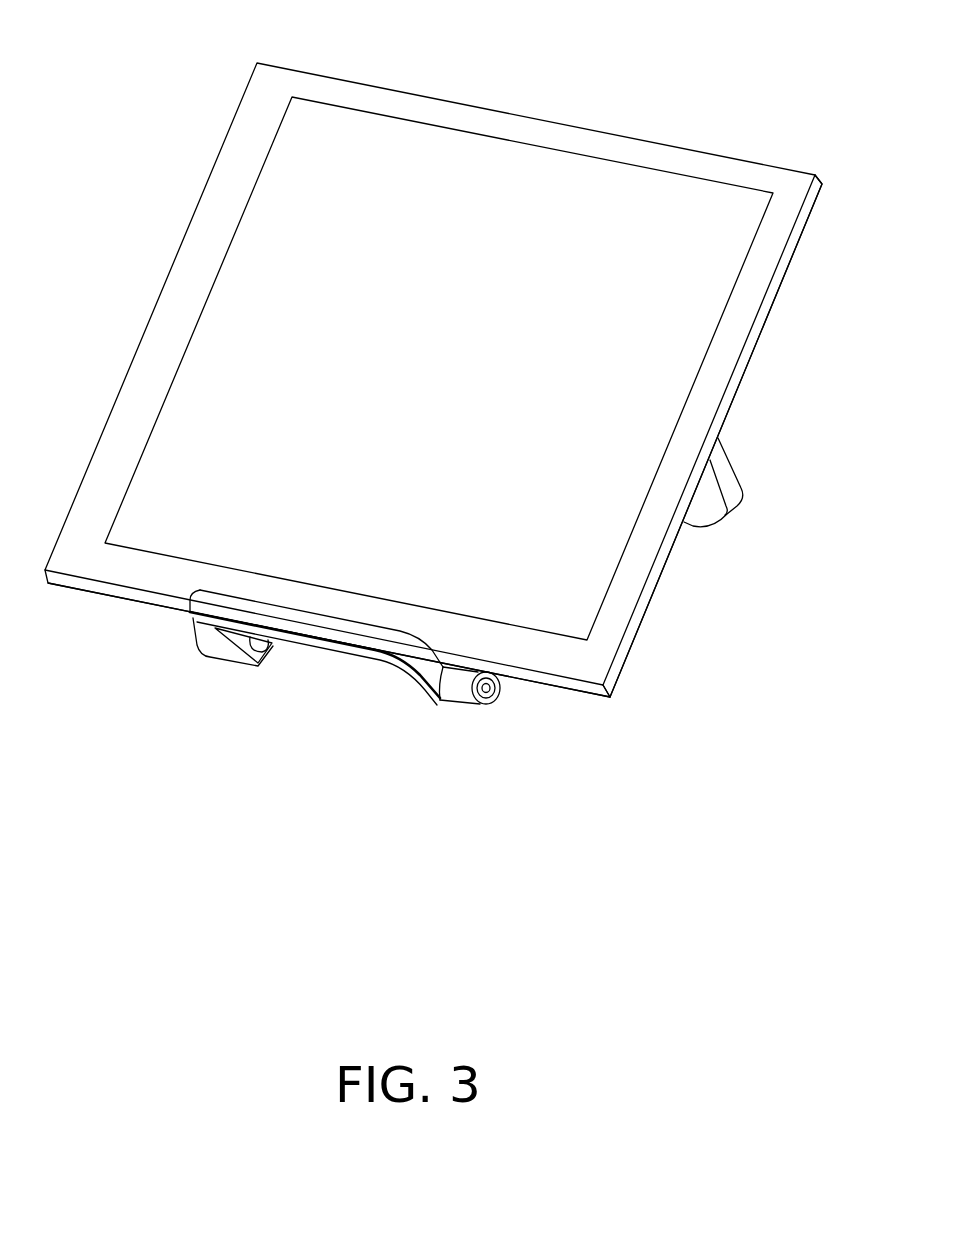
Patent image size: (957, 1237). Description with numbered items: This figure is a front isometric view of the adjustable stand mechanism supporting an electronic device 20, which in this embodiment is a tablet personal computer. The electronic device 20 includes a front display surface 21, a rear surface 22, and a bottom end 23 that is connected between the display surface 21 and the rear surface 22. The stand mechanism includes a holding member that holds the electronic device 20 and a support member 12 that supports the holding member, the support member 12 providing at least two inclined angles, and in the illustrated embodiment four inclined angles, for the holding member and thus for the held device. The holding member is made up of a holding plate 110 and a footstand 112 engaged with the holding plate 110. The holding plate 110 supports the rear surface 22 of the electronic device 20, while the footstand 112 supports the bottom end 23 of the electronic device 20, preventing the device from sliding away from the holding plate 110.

The electronic device 20 is at (313, 87).
The front display surface 21 is at (423, 162).
The rear surface 22 is at (765, 333).
The bottom end 23 is at (573, 683).
The support member 12 is at (723, 475).
The footstand 112 is at (323, 625).
The holding plate 110 is at (460, 692).